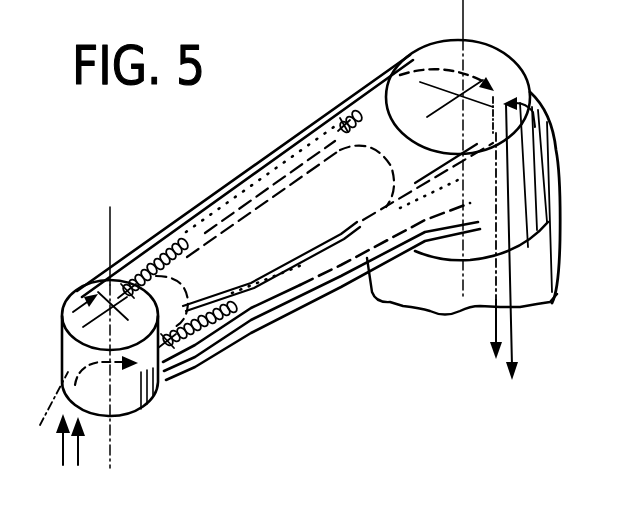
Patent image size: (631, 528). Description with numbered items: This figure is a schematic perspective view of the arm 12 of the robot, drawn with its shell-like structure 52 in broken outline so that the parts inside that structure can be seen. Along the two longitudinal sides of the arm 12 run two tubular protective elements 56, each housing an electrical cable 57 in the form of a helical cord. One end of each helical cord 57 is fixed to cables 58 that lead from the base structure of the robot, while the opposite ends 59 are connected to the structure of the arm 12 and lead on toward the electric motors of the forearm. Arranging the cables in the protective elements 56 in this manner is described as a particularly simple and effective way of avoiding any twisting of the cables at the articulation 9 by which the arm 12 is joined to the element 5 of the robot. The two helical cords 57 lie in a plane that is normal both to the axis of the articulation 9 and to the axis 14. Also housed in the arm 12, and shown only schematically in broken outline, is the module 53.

The element of the robot 5 is at (545, 267).
The articulation 9 is at (455, 319).
The arm 12 is at (248, 155).
The axis 14 is at (103, 460).
The shell-like structure 52 is at (333, 274).
The module 53 is at (305, 148).
The tubular protective elements 56 is at (200, 205).
The electrical cables 57 is at (160, 237).
The cables 58 is at (507, 313).
The cables 59 is at (52, 418).